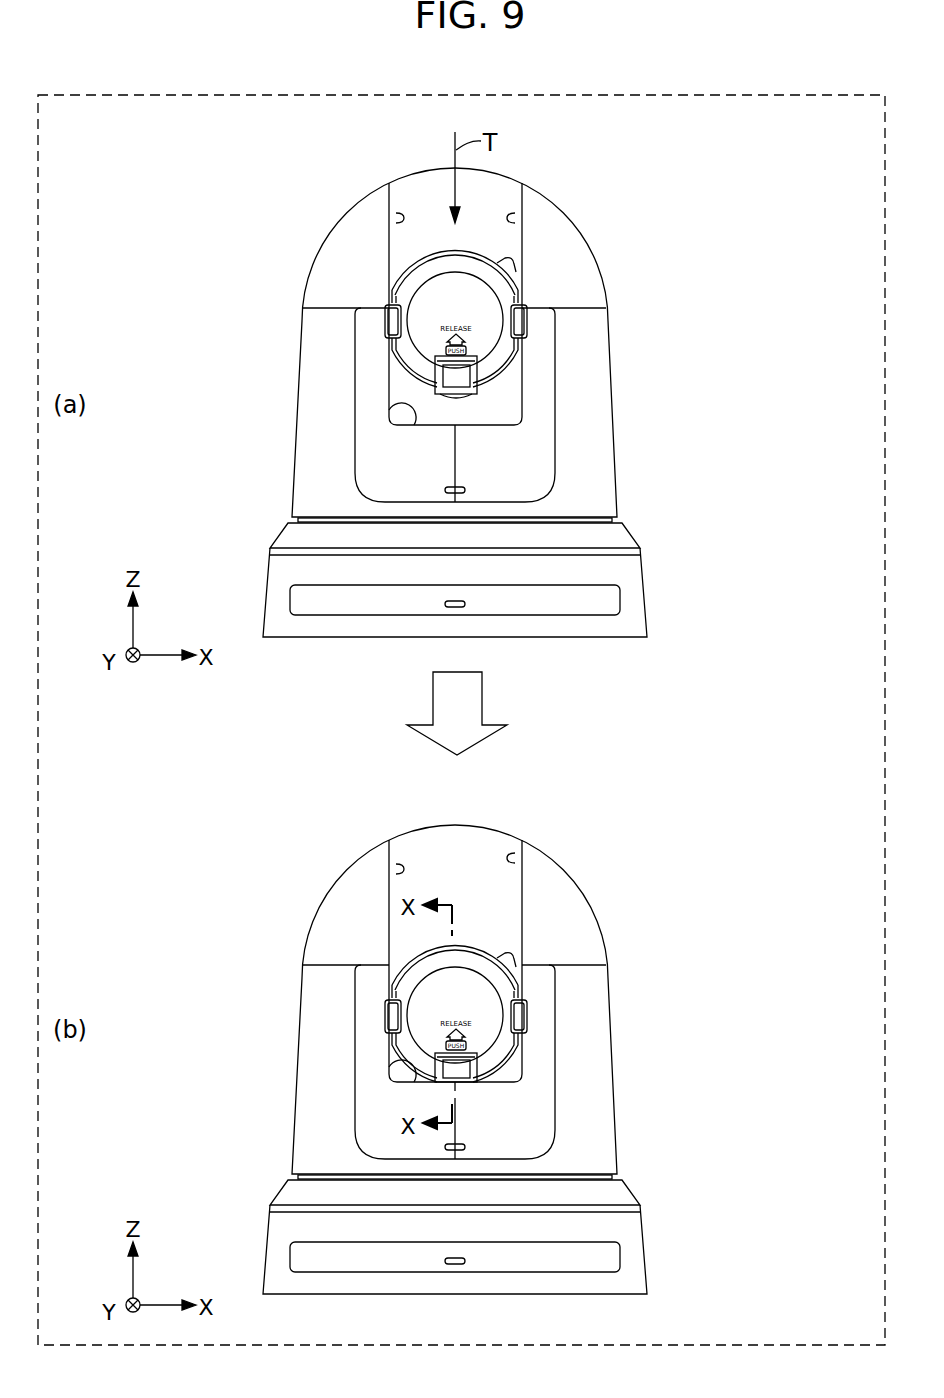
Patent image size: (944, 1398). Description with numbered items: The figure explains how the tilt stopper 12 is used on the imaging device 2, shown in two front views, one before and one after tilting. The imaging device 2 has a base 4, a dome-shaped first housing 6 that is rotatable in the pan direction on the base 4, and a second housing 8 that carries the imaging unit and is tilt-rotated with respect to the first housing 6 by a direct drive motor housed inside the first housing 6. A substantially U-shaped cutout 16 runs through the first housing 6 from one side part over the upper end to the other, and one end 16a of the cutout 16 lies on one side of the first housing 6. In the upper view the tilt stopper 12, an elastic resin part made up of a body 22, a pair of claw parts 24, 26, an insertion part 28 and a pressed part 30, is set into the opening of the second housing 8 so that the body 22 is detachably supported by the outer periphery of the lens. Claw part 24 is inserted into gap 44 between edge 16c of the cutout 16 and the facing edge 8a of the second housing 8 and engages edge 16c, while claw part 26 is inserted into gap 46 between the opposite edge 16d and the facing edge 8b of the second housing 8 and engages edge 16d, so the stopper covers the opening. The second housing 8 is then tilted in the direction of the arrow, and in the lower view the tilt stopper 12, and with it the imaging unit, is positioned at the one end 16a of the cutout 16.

The imaging device 2 is at (571, 191).
The base 4 is at (632, 602).
The first housing 6 is at (597, 373).
The second housing 8 is at (497, 194).
The edge of second housing 8a is at (390, 238).
The edge of second housing 8b is at (522, 243).
The tilt stopper 12 is at (481, 262).
The cutout 16 is at (393, 205).
The one end of cutout 16a is at (390, 412).
The edge of cutout 16c is at (397, 218).
The edge of cutout 16d is at (513, 220).
The body 22 is at (432, 268).
The claw part 24 is at (390, 322).
The claw part 26 is at (520, 322).
The insertion part 28 is at (460, 397).
The pressed part 30 is at (434, 373).
The gap 44 is at (390, 257).
The gap 46 is at (522, 262).